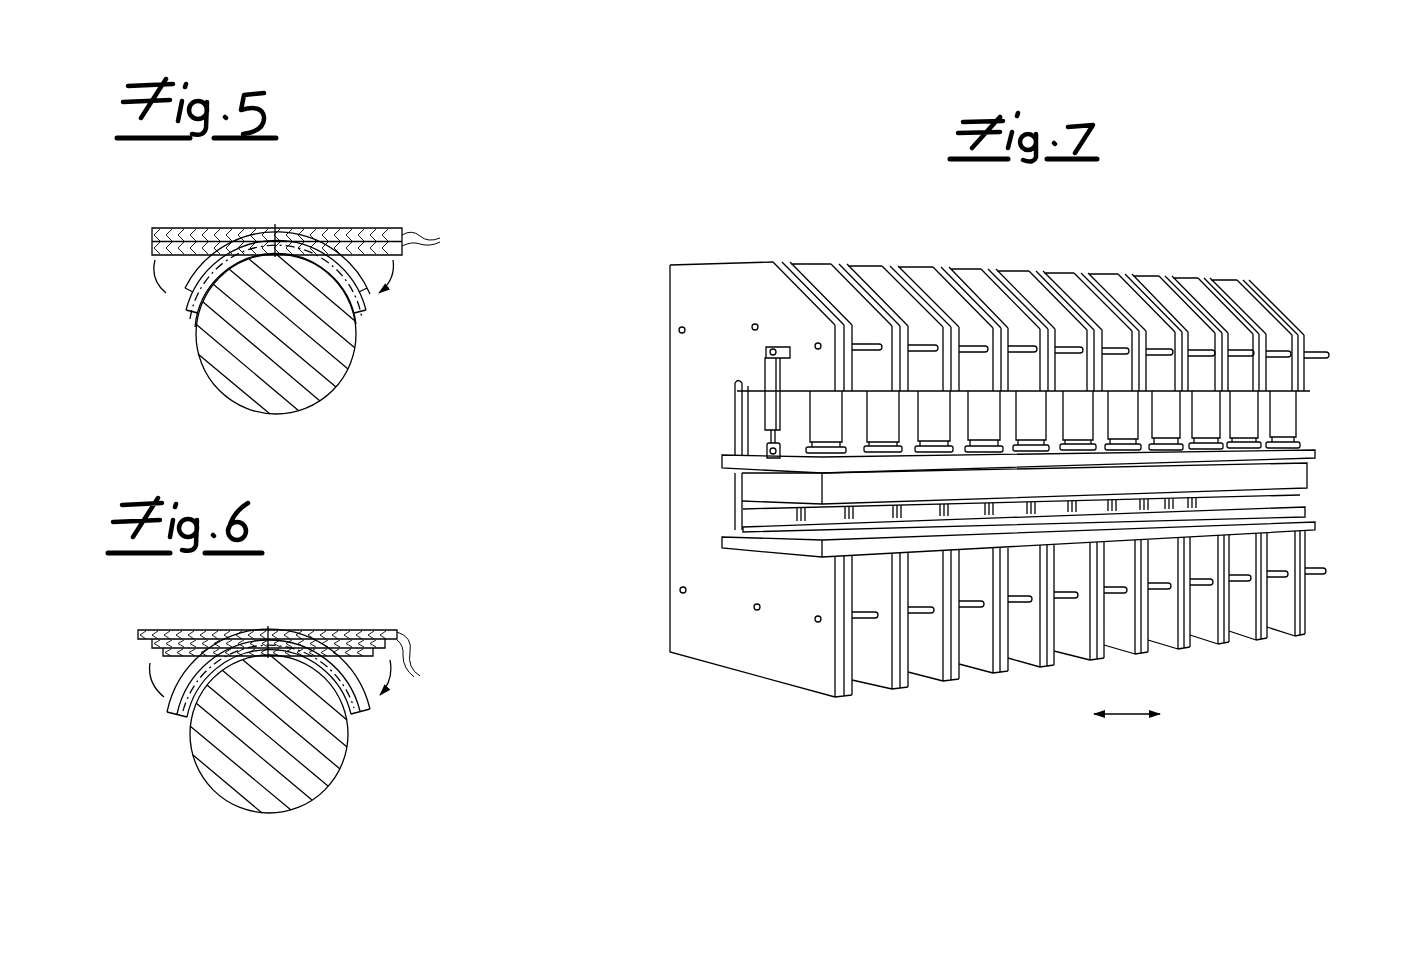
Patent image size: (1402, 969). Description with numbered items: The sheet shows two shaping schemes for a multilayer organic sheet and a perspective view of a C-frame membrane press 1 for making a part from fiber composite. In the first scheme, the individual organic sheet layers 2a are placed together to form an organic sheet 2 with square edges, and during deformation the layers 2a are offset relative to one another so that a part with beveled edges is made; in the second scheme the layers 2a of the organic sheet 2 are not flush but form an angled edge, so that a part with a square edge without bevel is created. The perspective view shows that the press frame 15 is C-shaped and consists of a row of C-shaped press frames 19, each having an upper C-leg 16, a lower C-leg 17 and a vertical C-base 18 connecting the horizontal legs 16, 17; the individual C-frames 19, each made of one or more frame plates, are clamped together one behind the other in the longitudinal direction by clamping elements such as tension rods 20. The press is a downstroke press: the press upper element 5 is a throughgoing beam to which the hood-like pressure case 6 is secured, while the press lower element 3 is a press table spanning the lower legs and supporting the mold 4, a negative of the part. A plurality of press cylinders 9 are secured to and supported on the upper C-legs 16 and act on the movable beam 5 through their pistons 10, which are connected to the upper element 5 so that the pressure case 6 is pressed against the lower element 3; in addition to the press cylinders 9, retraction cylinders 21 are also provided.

In FIG. 7, the membrane press 1 is at (818, 758).
In FIG. 5, the organic sheet 2 is at (359, 184).
In FIG. 6, the organic sheet 2 is at (370, 587).
In FIG. 5, the organic sheet layers 2a is at (438, 233).
In FIG. 6, the organic sheet layers 2a is at (424, 666).
In FIG. 7, the lower element 3 is at (1320, 527).
In FIG. 7, the mold 4 is at (1306, 513).
In FIG. 7, the upper element 5 is at (1320, 450).
In FIG. 7, the pressure case 6 is at (1306, 478).
In FIG. 7, the press cylinders 9 is at (1300, 410).
In FIG. 7, the piston 10 is at (1284, 432).
In FIG. 7, the press frame 15 is at (660, 630).
In FIG. 7, the upper C-leg 16 is at (745, 303).
In FIG. 7, the lower C-leg 17 is at (762, 638).
In FIG. 7, the C-base 18 is at (712, 437).
In FIG. 7, the C-frames 19 is at (950, 693).
In FIG. 7, the tension rods 20 is at (1018, 346).
In FIG. 7, the retraction cylinders 21 is at (766, 373).